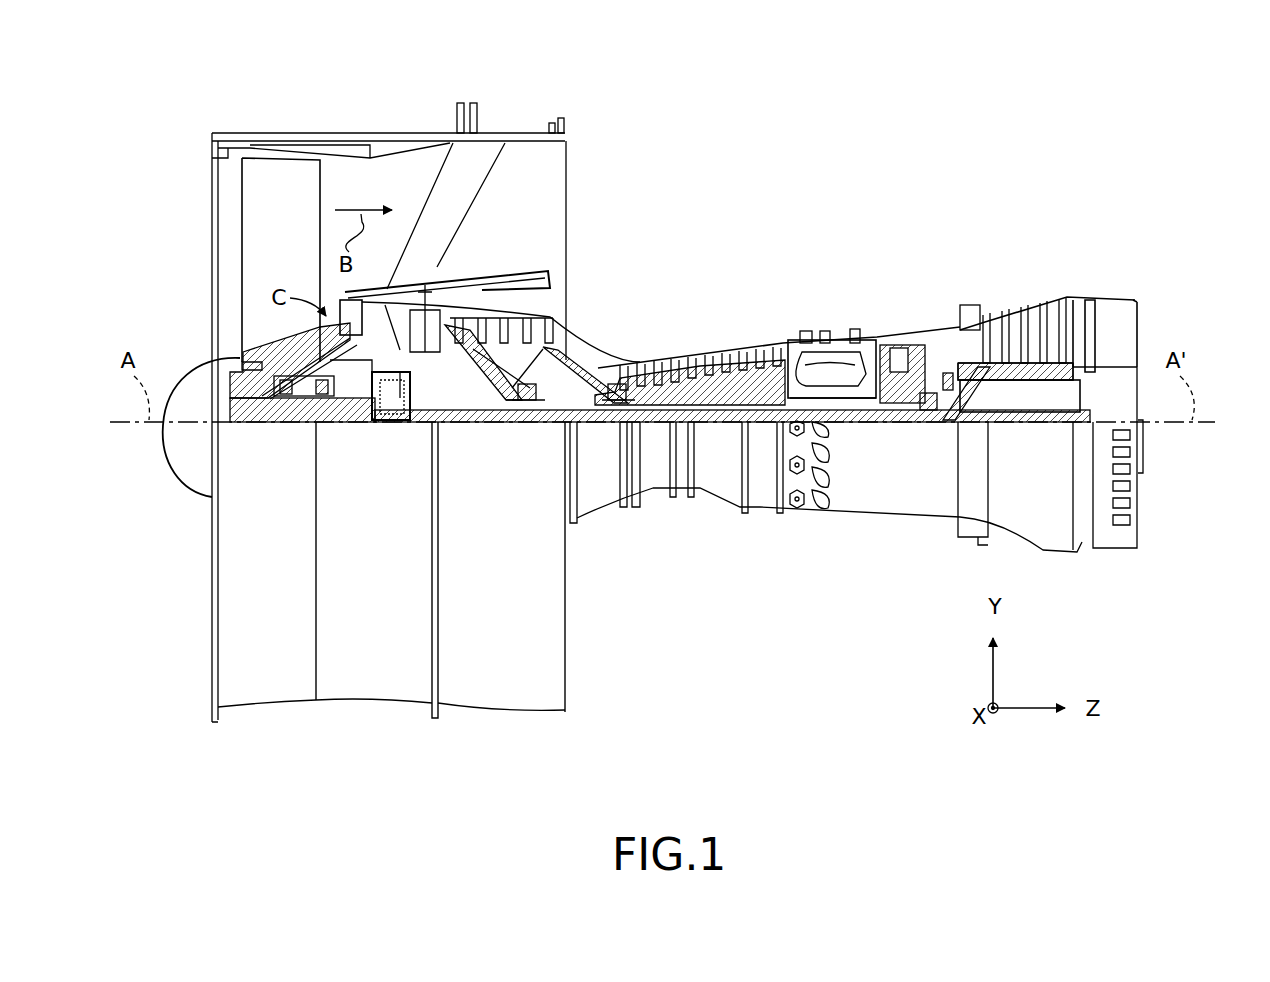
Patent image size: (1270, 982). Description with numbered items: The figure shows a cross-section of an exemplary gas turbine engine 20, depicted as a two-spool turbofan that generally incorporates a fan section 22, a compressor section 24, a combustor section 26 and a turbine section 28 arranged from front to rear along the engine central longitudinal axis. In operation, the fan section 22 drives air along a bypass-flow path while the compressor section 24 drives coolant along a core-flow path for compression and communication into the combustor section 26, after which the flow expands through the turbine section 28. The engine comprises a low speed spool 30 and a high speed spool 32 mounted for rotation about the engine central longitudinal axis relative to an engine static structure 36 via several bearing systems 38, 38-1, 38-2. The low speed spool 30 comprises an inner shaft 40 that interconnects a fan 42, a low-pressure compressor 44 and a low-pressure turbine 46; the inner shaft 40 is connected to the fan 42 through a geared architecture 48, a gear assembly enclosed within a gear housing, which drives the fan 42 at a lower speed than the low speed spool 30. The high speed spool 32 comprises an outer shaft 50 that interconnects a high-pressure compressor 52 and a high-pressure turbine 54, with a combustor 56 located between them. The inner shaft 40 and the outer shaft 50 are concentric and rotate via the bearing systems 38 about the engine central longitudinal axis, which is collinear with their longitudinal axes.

The gas turbine engine 20 is at (877, 128).
The fan section 22 is at (410, 122).
The compressor section 24 is at (698, 296).
The combustor section 26 is at (832, 293).
The turbine section 28 is at (1008, 304).
The low speed spool 30 is at (725, 442).
The high speed spool 32 is at (712, 335).
The engine static structure 36 is at (182, 737).
The bearing system 38 is at (945, 430).
The bearing system 38-1 is at (290, 398).
The bearing system 38-2 is at (522, 400).
The inner shaft 40 is at (588, 424).
The fan 42 is at (281, 264).
The low-pressure compressor 44 is at (508, 330).
The low-pressure turbine 46 is at (1046, 311).
The geared architecture 48 is at (392, 460).
The outer shaft 50 is at (816, 403).
The high-pressure compressor 52 is at (737, 388).
The high-pressure turbine 54 is at (897, 345).
The combustor 56 is at (838, 362).